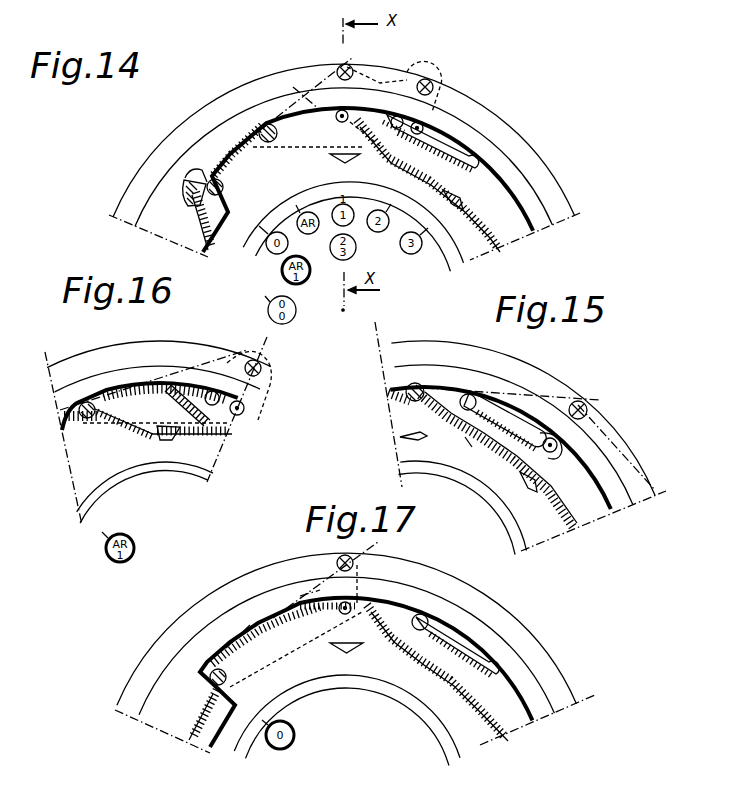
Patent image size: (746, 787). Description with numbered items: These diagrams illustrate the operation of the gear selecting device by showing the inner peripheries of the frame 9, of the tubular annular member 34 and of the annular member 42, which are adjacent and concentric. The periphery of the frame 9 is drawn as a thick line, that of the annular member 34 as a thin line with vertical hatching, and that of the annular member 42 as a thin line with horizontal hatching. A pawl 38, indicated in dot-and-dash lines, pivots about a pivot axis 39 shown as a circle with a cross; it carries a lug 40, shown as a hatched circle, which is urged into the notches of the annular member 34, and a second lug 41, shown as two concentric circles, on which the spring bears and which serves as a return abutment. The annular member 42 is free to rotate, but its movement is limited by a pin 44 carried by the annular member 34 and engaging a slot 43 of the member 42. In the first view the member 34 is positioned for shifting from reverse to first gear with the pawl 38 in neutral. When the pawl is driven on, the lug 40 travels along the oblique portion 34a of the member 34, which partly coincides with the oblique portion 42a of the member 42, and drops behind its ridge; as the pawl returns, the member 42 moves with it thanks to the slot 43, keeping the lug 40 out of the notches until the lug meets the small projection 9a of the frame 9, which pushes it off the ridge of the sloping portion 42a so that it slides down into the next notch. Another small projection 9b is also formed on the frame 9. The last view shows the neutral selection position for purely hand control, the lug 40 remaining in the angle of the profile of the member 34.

In FIG. 14, the frame 9 is at (200, 188).
In FIG. 17, the frame 9 is at (215, 735).
In FIG. 15, the small projection 9a is at (405, 438).
In FIG. 16, the small projection 9a is at (170, 440).
In FIG. 14, the small projection 9b is at (456, 205).
In FIG. 15, the small projection 9b is at (523, 482).
In FIG. 14, the tubular member 34 is at (210, 180).
In FIG. 15, the tubular member 34 is at (406, 400).
In FIG. 17, the tubular member 34 is at (267, 623).
In FIG. 15, the oblique portion 34a is at (443, 410).
In FIG. 14, the pawl 38 is at (307, 100).
In FIG. 17, the pawl 38 is at (312, 587).
In FIG. 14, the pivot axis 39 is at (348, 70).
In FIG. 16, the pivot axis 39 is at (262, 368).
In FIG. 17, the pivot axis 39 is at (353, 561).
In FIG. 14, the lug 40 is at (200, 176).
In FIG. 16, the lug 40 is at (83, 401).
In FIG. 17, the lug 40 is at (205, 670).
In FIG. 14, the lug 41 is at (347, 111).
In FIG. 15, the lug 41 is at (557, 445).
In FIG. 16, the lug 41 is at (244, 410).
In FIG. 17, the lug 41 is at (352, 605).
In FIG. 14, the annular member 42 is at (185, 187).
In FIG. 17, the annular member 42 is at (247, 628).
In FIG. 15, the oblique portion 42a is at (467, 440).
In FIG. 16, the oblique portion 42a is at (118, 415).
In FIG. 14, the slot 43 is at (452, 148).
In FIG. 15, the slot 43 is at (507, 415).
In FIG. 16, the slot 43 is at (192, 393).
In FIG. 17, the slot 43 is at (453, 640).
In FIG. 14, the pin 44 is at (416, 112).
In FIG. 15, the pin 44 is at (478, 396).
In FIG. 16, the pin 44 is at (220, 395).
In FIG. 17, the pin 44 is at (425, 617).